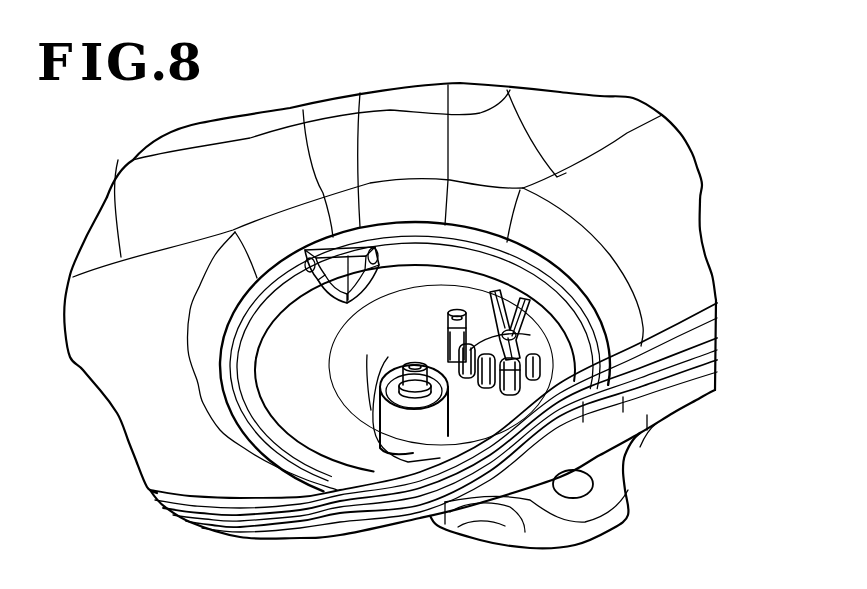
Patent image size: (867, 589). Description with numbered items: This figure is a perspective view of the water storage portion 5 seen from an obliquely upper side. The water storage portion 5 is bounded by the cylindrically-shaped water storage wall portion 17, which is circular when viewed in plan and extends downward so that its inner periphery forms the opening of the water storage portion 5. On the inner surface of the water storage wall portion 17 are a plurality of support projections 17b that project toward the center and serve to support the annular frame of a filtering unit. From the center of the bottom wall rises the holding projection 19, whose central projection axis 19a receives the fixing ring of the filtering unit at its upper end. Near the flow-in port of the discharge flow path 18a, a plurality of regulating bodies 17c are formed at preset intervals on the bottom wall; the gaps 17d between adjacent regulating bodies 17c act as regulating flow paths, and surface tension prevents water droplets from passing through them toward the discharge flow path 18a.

The water storage wall portion 17 is at (508, 246).
The support projections 17b is at (332, 250).
The regulating bodies 17c is at (500, 327).
The gaps 17d is at (468, 394).
The discharge flow path 18a is at (520, 307).
The holding projection 19 is at (386, 418).
The projection axis 19a is at (397, 380).
The water storage portion 5 is at (282, 355).